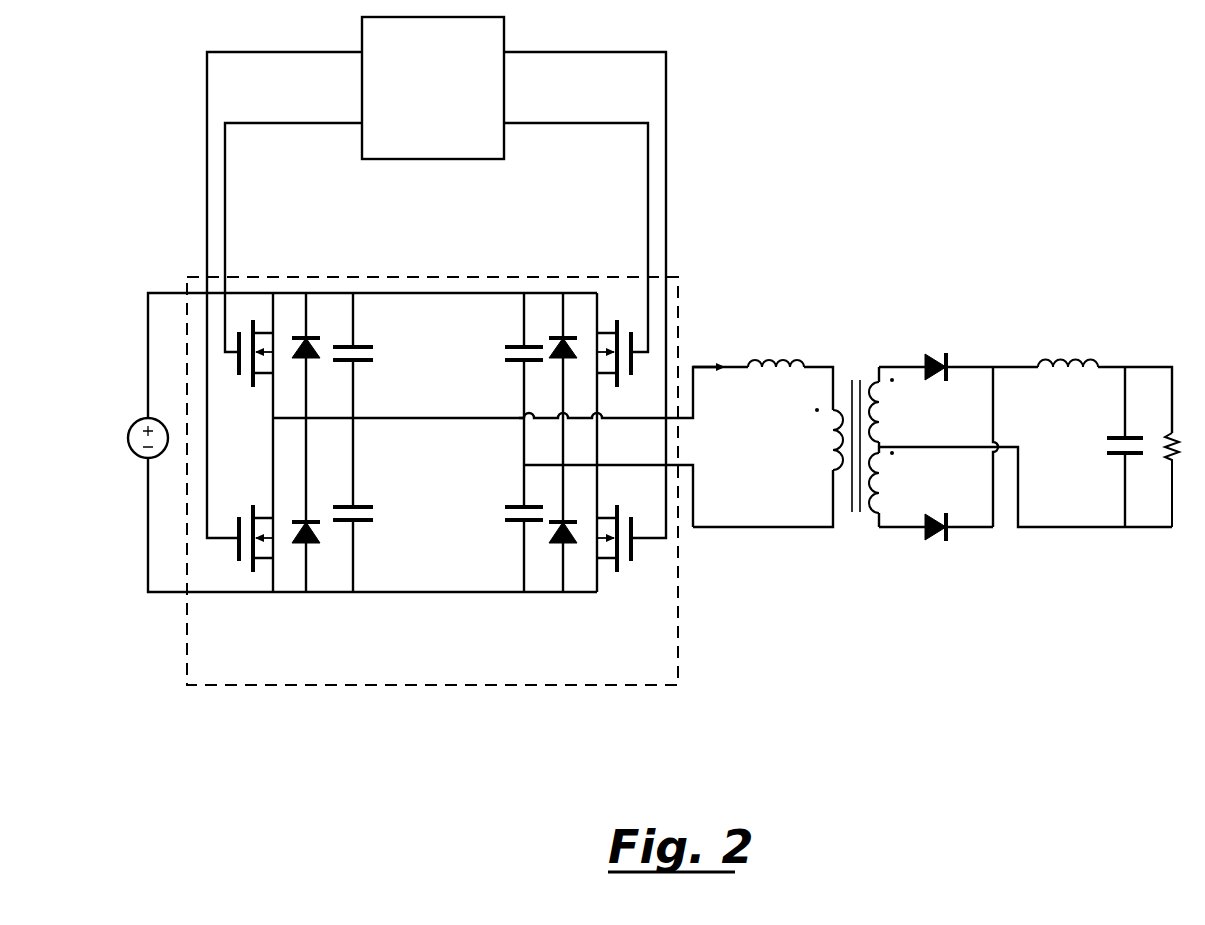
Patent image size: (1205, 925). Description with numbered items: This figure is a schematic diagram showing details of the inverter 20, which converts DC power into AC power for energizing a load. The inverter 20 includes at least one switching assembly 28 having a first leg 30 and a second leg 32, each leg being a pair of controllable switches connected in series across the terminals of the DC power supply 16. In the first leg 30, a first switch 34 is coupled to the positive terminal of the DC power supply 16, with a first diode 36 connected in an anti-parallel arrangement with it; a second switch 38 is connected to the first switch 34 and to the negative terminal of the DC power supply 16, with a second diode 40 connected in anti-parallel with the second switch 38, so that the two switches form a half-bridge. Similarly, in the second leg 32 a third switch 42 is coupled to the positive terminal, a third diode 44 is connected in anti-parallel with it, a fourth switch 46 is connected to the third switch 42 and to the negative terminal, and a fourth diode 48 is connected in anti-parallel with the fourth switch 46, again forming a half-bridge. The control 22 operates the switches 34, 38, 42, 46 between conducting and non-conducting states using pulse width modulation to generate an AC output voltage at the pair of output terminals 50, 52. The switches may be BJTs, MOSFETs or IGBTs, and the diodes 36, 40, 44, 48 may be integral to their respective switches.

The DC power supply 16 is at (128, 437).
The inverter 20 is at (836, 108).
The control 22 is at (437, 160).
The switching assembly 28 is at (353, 268).
The first leg 30 is at (371, 480).
The second leg 32 is at (609, 479).
The first switch 34 is at (238, 374).
The first diode 36 is at (308, 337).
The second switch 38 is at (240, 518).
The second diode 40 is at (308, 521).
The third switch 42 is at (640, 366).
The third diode 44 is at (565, 337).
The fourth switch 46 is at (636, 519).
The fourth diode 48 is at (565, 521).
The output terminal 50 is at (694, 403).
The output terminal 52 is at (694, 488).